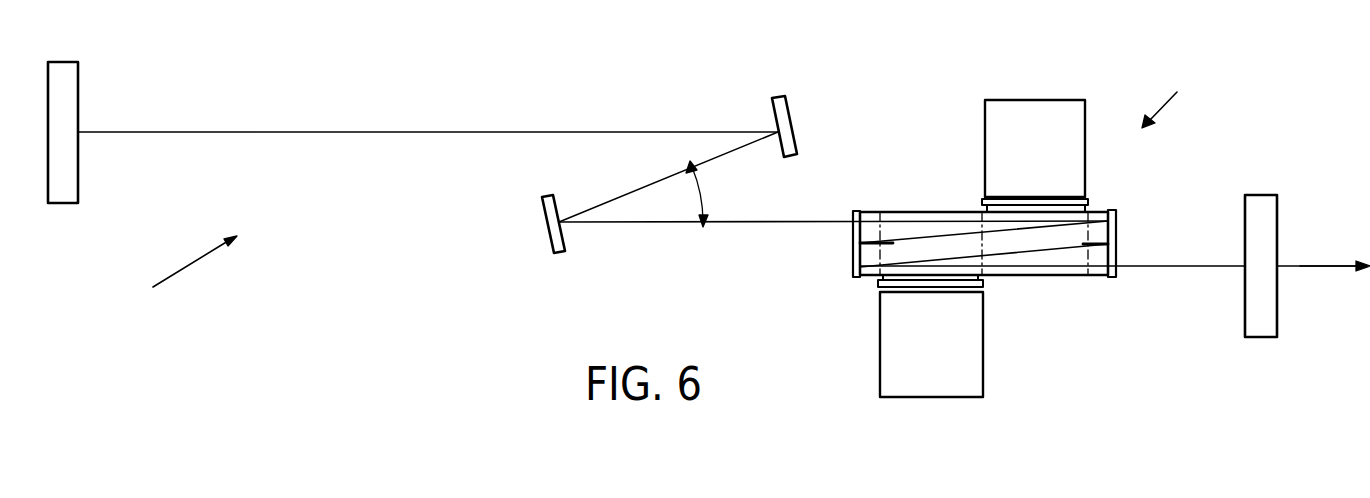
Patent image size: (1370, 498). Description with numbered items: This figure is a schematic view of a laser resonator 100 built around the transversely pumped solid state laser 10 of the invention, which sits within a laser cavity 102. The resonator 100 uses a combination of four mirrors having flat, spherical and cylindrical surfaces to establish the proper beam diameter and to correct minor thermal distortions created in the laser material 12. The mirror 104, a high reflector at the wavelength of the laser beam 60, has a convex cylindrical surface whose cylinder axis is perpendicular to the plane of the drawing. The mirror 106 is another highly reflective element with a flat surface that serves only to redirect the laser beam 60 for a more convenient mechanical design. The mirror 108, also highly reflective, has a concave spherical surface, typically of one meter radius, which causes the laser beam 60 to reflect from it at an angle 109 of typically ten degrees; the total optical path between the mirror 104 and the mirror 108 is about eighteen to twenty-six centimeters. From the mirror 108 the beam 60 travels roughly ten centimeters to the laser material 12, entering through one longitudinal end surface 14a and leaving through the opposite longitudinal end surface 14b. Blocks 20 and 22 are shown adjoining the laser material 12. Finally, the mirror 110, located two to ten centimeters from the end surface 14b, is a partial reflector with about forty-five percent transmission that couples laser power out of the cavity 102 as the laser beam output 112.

The laser resonator 100 is at (549, 46).
The laser cavity 102 is at (176, 276).
The mirror 104 is at (78, 91).
The mirror 106 is at (770, 110).
The mirror 108 is at (540, 217).
The angle 109 is at (707, 192).
The laser beam 60 is at (415, 131).
The transversely pumped solid state laser 10 is at (1174, 100).
The laser material 12 is at (1030, 277).
The longitudinal end surface 14a is at (852, 240).
The longitudinal end surface 14b is at (1117, 228).
The lower component block 20 is at (949, 352).
The upper component block 22 is at (1050, 157).
The mirror 110 is at (1262, 338).
The laser beam output 112 is at (1325, 260).